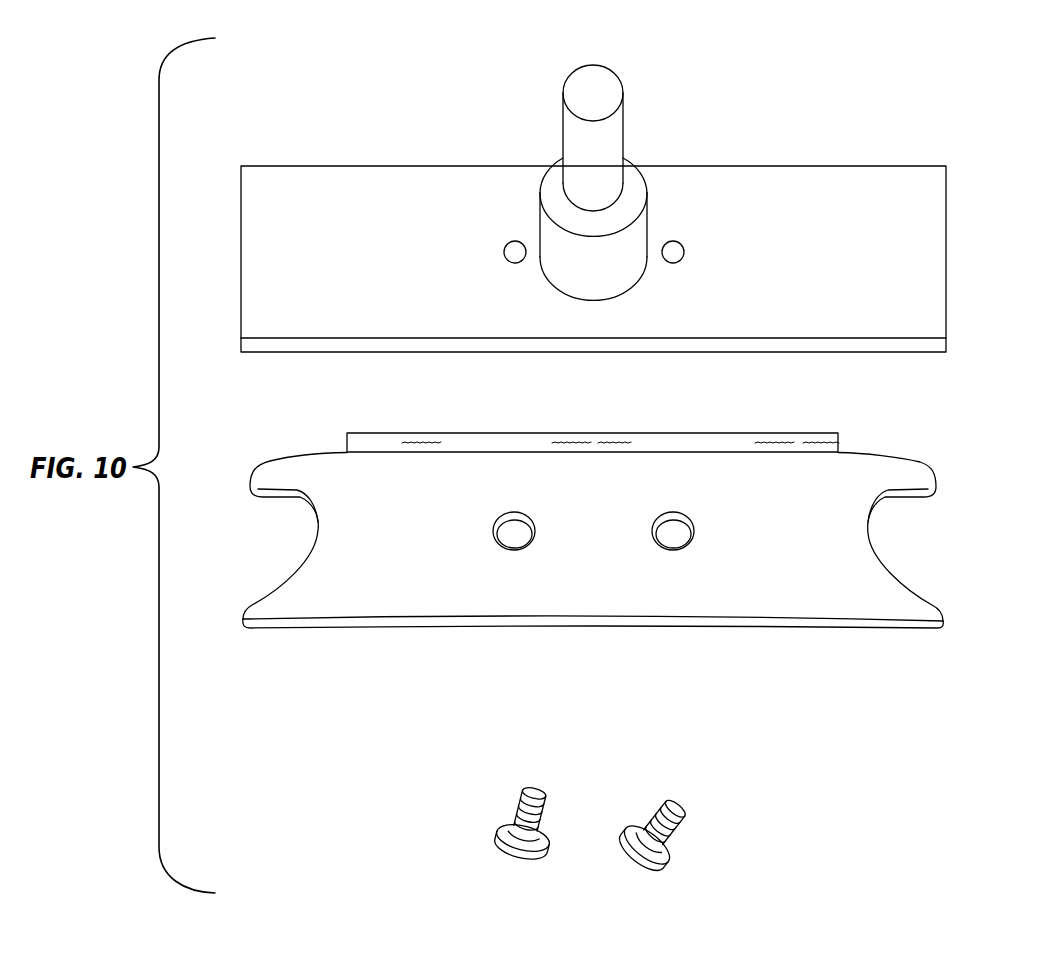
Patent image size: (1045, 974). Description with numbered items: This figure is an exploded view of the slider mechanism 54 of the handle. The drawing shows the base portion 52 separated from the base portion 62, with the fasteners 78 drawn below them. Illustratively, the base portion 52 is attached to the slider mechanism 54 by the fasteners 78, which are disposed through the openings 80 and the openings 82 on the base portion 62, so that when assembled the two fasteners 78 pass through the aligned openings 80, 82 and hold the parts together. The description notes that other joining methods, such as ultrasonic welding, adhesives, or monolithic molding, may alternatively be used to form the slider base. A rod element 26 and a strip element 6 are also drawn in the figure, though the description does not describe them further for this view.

The slider mechanism 54 is at (748, 72).
The base portion 62 is at (883, 205).
The pin 26 is at (610, 130).
The openings 82 is at (515, 240).
The adhesive strip 6 is at (840, 443).
The base portion 52 is at (773, 550).
The openings 80 is at (514, 510).
The fasteners 78 is at (532, 856).